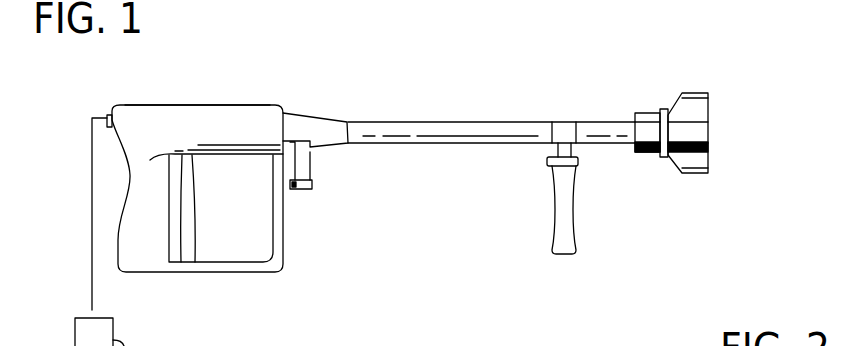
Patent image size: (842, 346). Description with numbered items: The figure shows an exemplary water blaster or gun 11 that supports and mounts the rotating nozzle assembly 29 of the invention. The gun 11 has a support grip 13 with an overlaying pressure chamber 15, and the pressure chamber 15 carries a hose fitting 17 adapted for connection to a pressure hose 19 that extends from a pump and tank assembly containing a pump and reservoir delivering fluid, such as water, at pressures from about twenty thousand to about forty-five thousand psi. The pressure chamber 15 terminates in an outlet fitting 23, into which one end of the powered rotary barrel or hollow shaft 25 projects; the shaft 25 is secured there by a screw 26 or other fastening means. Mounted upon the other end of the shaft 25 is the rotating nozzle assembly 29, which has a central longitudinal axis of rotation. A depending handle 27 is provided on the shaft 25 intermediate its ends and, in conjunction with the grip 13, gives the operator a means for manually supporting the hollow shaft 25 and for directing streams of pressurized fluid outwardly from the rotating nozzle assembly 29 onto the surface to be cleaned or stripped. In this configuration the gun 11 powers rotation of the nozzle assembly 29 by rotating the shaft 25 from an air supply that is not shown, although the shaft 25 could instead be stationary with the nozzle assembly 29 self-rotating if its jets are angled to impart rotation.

The water blaster or gun 11 is at (485, 92).
The support grip 13 is at (158, 262).
The pressure chamber 15 is at (217, 108).
The hose fitting 17 is at (108, 118).
The pressure hose 19 is at (93, 283).
The outlet fitting 23 is at (317, 114).
The powered rotary barrel or hollow shaft 25 is at (482, 143).
The screw 26 is at (300, 189).
The depending handle 27 is at (548, 252).
The rotating nozzle assembly 29 is at (693, 88).